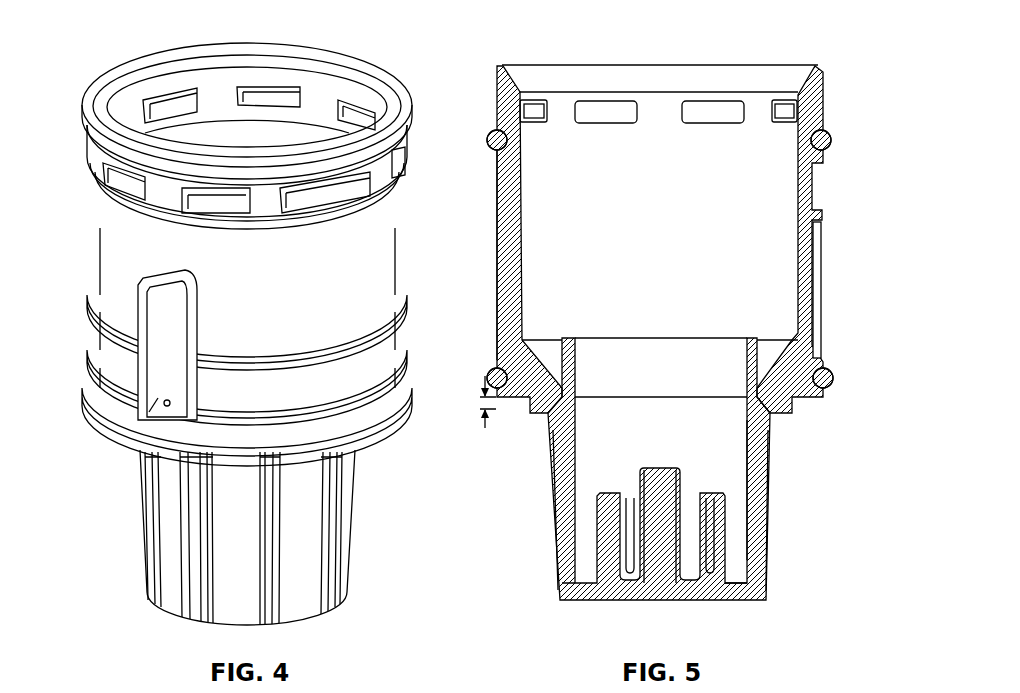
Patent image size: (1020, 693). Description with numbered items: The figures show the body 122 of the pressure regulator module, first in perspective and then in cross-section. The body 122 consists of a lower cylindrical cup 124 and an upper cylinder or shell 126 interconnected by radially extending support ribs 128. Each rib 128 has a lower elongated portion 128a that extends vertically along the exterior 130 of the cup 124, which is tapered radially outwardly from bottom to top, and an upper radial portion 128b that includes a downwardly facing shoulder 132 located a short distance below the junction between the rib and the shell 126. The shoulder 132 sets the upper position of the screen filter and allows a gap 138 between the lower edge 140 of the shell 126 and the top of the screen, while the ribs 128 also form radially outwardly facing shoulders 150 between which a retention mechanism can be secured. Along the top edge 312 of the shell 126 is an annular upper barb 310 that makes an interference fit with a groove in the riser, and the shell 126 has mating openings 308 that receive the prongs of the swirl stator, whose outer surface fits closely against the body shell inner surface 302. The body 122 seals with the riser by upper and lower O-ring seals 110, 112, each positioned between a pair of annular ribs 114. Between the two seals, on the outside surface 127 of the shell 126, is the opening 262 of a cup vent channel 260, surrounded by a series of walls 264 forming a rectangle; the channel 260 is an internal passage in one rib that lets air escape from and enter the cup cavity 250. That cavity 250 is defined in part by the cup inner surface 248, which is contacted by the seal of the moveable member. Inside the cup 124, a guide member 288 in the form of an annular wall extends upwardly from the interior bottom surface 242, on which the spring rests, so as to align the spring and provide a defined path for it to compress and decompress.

In FIG. 4, the body 122 is at (123, 29).
In FIG. 5, the body 122 is at (504, 29).
In FIG. 4, the upper cylinder 126 is at (99, 257).
In FIG. 5, the upper cylinder 126 is at (829, 236).
In FIG. 4, the annular ribs 114 is at (403, 155).
In FIG. 4, the walls 264 is at (168, 287).
In FIG. 5, the walls 264 is at (813, 212).
In FIG. 4, the opening 262 is at (158, 404).
In FIG. 5, the opening 262 is at (812, 343).
In FIG. 4, the lower cylindrical cup 124 is at (131, 569).
In FIG. 5, the lower cylindrical cup 124 is at (772, 532).
In FIG. 4, the lower elongated portion 128a is at (268, 573).
In FIG. 5, the lower elongated portion 128a is at (735, 486).
In FIG. 5, the upper radial portion 128b is at (573, 395).
In FIG. 5, the support ribs 128 is at (533, 367).
In FIG. 5, the annular upper barb 310 is at (483, 65).
In FIG. 5, the top edge 312 is at (505, 58).
In FIG. 5, the mating openings 308 is at (607, 108).
In FIG. 5, the body shell inner surface 302 is at (498, 227).
In FIG. 5, the upper seal 110 is at (821, 132).
In FIG. 5, the lower seal 112 is at (826, 371).
In FIG. 5, the outside surface 127 is at (818, 348).
In FIG. 5, the inner surface 248 is at (573, 352).
In FIG. 5, the channel 260 is at (762, 392).
In FIG. 5, the gap 138 is at (488, 402).
In FIG. 5, the shoulder 132 is at (546, 426).
In FIG. 5, the exterior 130 is at (552, 480).
In FIG. 5, the lower edge 140 is at (798, 399).
In FIG. 5, the shoulders 150 is at (794, 413).
In FIG. 5, the cup cavity 250 is at (767, 476).
In FIG. 5, the guide member 288 is at (603, 537).
In FIG. 5, the interior bottom surface 242 is at (737, 578).